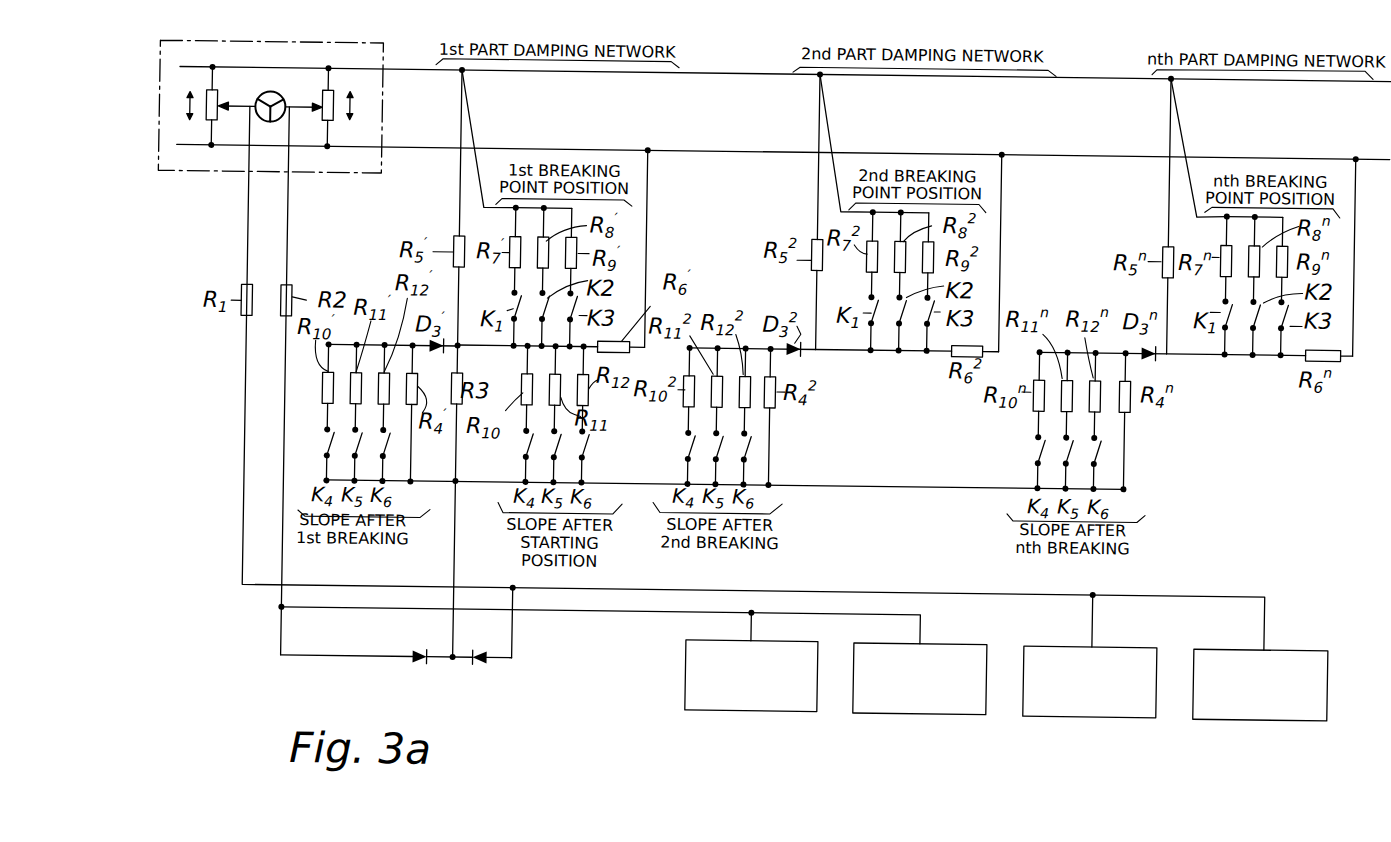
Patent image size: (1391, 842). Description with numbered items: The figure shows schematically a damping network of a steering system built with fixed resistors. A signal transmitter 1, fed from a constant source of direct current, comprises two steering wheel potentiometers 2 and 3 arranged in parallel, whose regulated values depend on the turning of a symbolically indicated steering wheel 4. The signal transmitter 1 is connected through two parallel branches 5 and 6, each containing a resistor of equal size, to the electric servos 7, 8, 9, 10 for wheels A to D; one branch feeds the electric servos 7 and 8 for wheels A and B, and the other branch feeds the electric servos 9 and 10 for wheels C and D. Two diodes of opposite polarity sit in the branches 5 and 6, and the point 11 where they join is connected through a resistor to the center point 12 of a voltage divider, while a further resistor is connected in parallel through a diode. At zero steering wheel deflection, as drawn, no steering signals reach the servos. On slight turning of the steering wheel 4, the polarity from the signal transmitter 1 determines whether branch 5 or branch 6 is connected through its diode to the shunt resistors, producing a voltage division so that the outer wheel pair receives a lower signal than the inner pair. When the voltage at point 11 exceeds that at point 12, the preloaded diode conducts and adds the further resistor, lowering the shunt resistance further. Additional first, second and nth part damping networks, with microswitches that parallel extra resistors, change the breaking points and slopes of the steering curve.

The signal transmitter 1 is at (354, 158).
The steering wheel potentiometer 2 is at (331, 94).
The steering wheel potentiometer 3 is at (218, 96).
The steering wheel 4 is at (270, 94).
The parallel branch 5 is at (250, 233).
The parallel branch 6 is at (291, 229).
The electric servo 7 is at (722, 708).
The electric servo 8 is at (900, 708).
The electric servo 9 is at (1084, 709).
The electric servo 10 is at (1265, 709).
The point 11 is at (462, 659).
The center point 12 is at (464, 346).